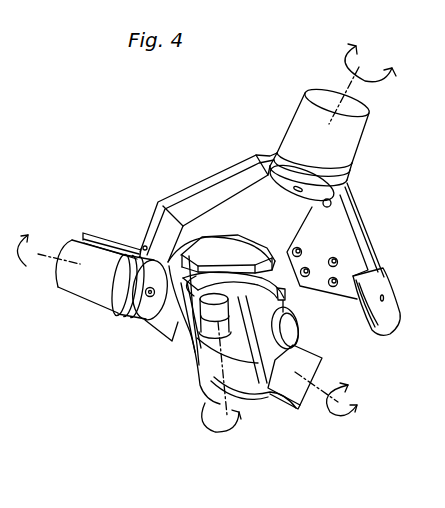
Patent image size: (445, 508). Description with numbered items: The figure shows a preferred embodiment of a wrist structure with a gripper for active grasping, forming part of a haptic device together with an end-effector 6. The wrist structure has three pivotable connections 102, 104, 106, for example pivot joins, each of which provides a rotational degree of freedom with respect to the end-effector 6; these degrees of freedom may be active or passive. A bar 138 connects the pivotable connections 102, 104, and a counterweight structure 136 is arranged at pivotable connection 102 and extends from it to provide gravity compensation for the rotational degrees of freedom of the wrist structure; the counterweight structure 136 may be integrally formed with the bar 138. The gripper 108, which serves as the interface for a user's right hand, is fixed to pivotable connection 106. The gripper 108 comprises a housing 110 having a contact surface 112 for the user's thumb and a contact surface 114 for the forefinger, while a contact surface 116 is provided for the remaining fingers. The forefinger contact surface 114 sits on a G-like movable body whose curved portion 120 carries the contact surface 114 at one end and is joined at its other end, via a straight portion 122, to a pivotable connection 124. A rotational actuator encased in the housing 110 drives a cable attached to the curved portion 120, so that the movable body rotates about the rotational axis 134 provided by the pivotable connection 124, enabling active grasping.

The end-effector 6 is at (306, 236).
The pivotable connection 102 is at (353, 141).
The pivotable connection 104 is at (103, 252).
The pivotable connection 106 is at (323, 377).
The gripper 108 is at (187, 383).
The housing 110 is at (265, 403).
The contact surface 112 is at (192, 332).
The contact surface 114 is at (303, 333).
The contact surface 116 is at (301, 405).
The curved portion 120 is at (290, 300).
The straight portion 122 is at (175, 256).
The pivotable connection 124 is at (210, 405).
The rotational axis 134 is at (218, 434).
The counterweight structure 136 is at (360, 236).
The bar 138 is at (214, 173).